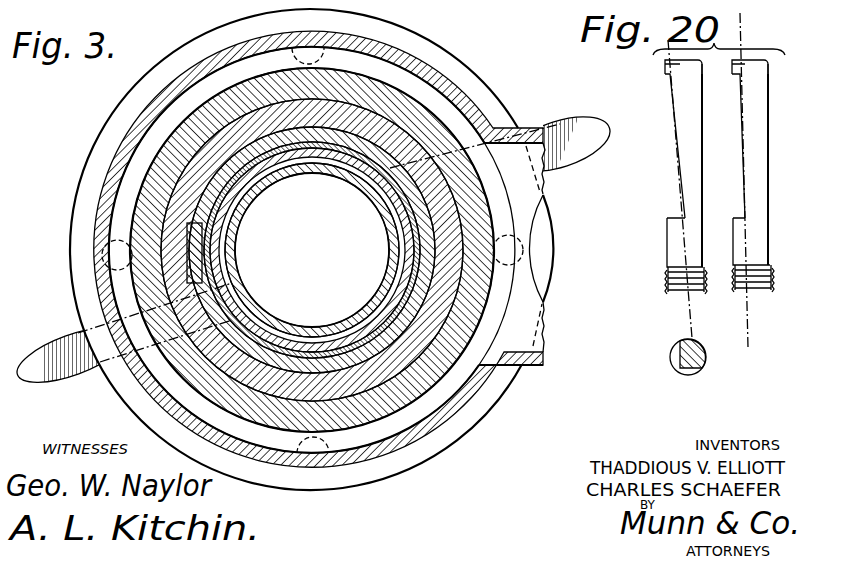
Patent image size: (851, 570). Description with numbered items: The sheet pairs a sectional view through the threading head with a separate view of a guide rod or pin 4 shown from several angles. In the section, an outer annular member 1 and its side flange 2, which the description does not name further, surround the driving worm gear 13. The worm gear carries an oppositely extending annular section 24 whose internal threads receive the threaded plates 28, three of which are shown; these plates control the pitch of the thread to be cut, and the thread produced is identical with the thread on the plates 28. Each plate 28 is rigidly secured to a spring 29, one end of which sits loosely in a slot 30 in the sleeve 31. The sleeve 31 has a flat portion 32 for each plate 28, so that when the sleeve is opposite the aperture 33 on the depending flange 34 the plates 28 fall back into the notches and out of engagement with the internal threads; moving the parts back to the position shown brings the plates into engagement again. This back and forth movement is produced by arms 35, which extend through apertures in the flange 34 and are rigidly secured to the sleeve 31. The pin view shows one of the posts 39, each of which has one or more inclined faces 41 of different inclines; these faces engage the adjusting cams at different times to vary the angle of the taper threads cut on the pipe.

In FIG. 3, the casing ring 1 is at (478, 416).
In FIG. 3, the flange 2 is at (536, 365).
In FIG. 20, the pin 4 is at (692, 120).
In FIG. 3, the worm gear 13 is at (205, 198).
In FIG. 3, the annular section 24 is at (226, 168).
In FIG. 3, the threaded plates 28 is at (372, 150).
In FIG. 3, the spring 29 is at (393, 163).
In FIG. 3, the slot 30 is at (454, 245).
In FIG. 3, the sleeve 31 is at (378, 323).
In FIG. 3, the flat portion 32 is at (389, 186).
In FIG. 3, the aperture 33 is at (339, 140).
In FIG. 3, the depending flange 34 is at (318, 133).
In FIG. 3, the arms 35 is at (49, 360).
In FIG. 20, the posts 39 is at (758, 184).
In FIG. 20, the inclined faces 41 is at (678, 358).